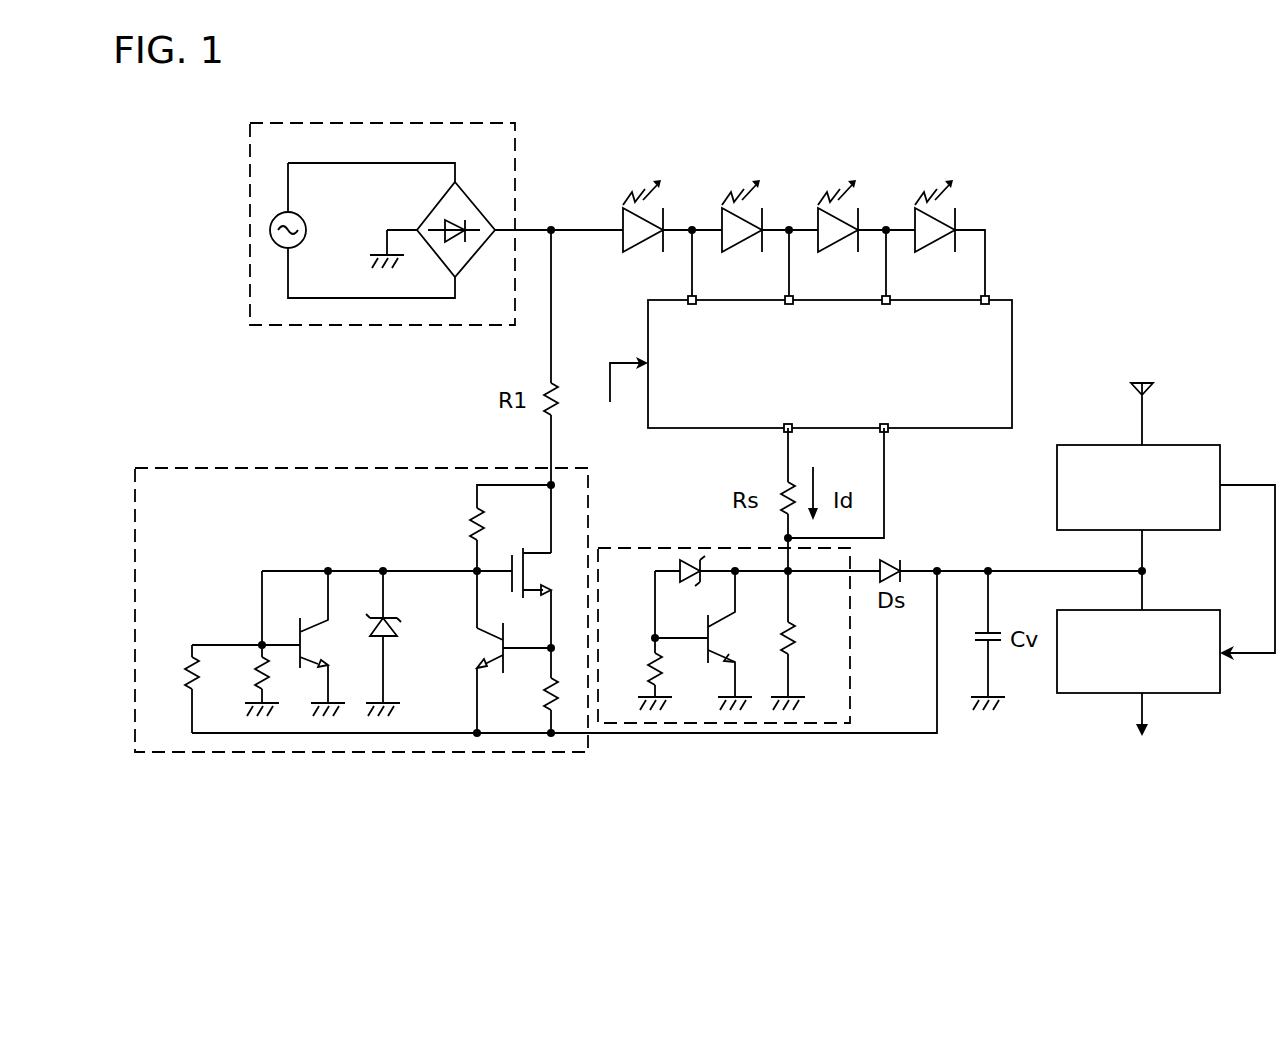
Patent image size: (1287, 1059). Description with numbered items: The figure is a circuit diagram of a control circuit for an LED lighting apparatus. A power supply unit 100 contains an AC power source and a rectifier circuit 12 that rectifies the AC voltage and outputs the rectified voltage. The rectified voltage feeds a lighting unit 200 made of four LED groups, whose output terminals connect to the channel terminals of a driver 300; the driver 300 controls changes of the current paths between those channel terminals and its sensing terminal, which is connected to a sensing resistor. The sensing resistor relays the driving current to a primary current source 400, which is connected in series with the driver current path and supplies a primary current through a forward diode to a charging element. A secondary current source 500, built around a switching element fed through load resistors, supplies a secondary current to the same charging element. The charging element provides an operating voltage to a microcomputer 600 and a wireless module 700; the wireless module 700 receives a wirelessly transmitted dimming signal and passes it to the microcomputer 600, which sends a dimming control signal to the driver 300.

The power supply unit 100 is at (382, 201).
The rectifier circuit 12 is at (460, 188).
The lighting unit 200 is at (980, 142).
The driver 300 is at (760, 430).
The primary current source 400 is at (690, 550).
The secondary current source 500 is at (303, 468).
The microcomputer 600 is at (1193, 694).
The wireless module 700 is at (1105, 444).